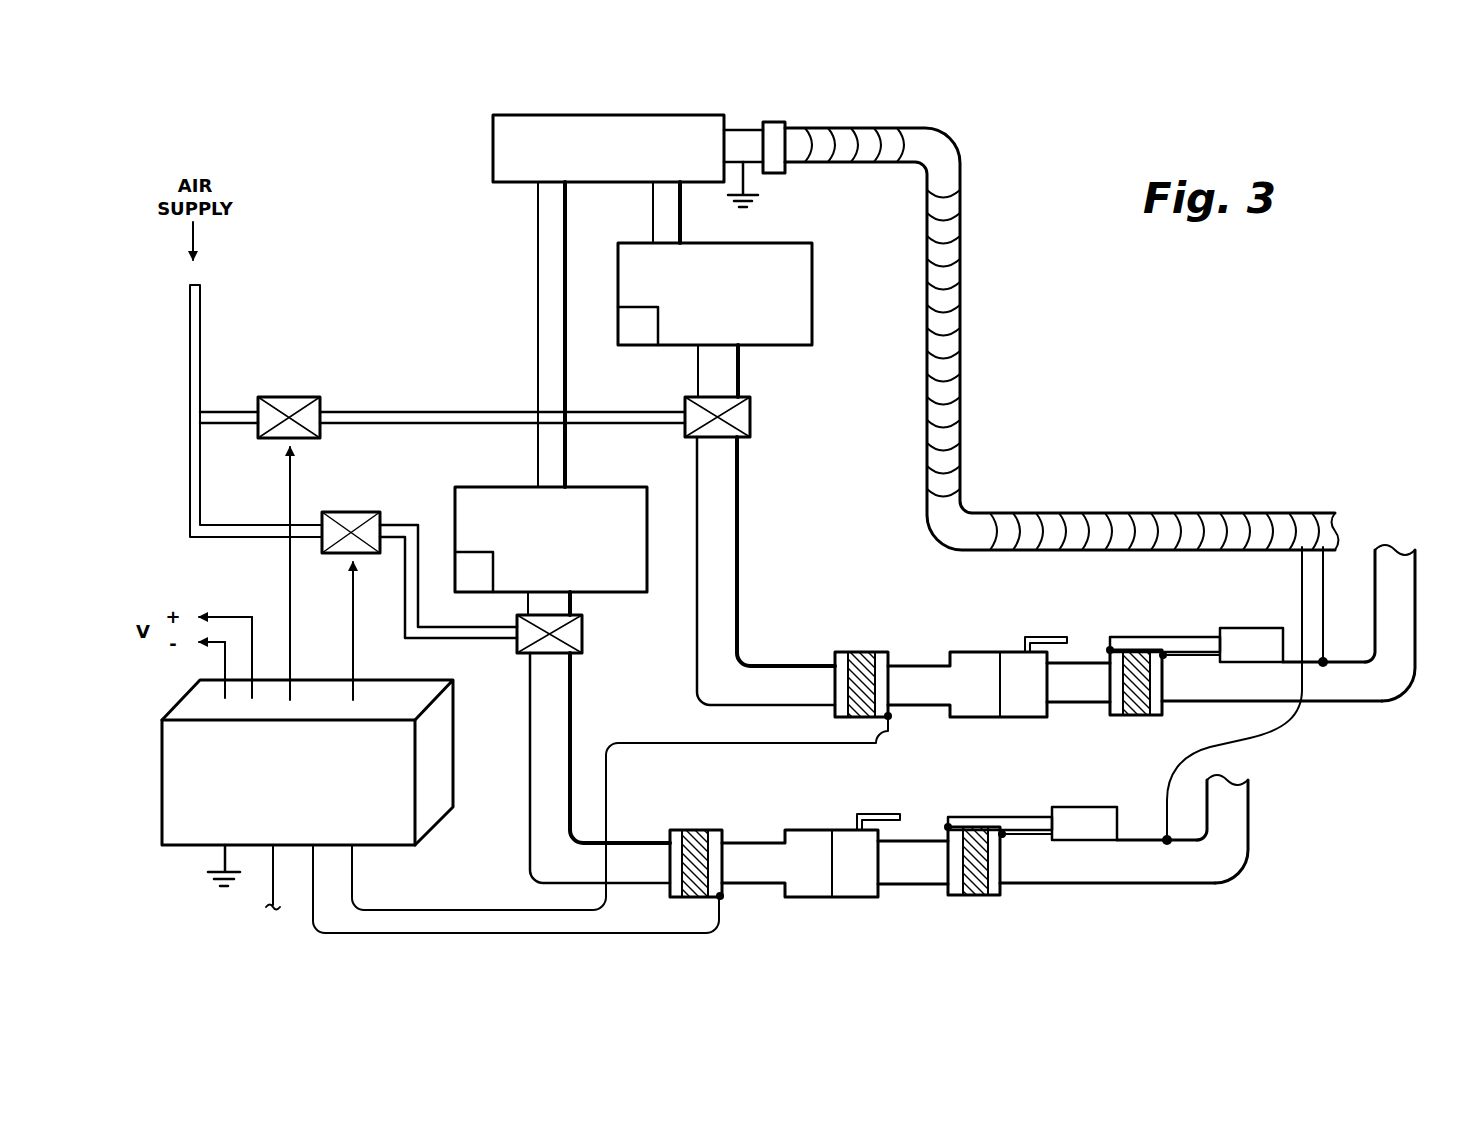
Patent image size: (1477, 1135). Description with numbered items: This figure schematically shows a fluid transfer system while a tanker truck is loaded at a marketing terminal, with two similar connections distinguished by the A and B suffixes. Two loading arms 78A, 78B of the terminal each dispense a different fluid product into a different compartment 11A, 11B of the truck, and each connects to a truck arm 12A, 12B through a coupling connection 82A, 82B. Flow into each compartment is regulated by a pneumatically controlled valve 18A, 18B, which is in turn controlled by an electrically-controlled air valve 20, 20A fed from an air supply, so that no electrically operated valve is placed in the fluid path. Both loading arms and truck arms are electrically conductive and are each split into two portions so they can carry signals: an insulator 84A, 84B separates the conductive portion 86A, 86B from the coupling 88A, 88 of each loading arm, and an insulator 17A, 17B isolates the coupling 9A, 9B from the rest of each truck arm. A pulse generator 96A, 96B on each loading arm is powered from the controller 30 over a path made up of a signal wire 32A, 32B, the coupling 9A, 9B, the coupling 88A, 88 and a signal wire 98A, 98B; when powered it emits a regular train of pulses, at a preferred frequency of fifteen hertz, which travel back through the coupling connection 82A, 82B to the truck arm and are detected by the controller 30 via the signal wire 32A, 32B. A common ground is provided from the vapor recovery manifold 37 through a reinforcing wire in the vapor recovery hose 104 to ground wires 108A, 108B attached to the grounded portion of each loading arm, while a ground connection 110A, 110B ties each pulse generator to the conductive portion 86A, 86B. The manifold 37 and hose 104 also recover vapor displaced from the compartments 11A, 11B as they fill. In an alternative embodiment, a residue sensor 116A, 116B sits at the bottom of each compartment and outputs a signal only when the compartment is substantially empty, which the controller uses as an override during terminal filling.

The vapor recovery manifold 37 is at (675, 123).
The compartment 11A is at (605, 498).
The compartment 11B is at (772, 253).
The residue sensor 116A is at (480, 573).
The residue sensor 116B is at (650, 322).
The vapor recovery hose 104 is at (950, 348).
The electrically-controlled air valve 20 is at (293, 405).
The electrically-controlled air valve 20A is at (353, 522).
The pneumatically controlled valve 18A is at (572, 635).
The pneumatically controlled valve 18B is at (740, 417).
The truck arm 12A is at (560, 713).
The truck arm 12B is at (725, 560).
The controller 30 is at (170, 760).
The signal wire 32A is at (313, 928).
The signal wire 32B is at (360, 903).
The insulator 17A is at (692, 838).
The insulator 17B is at (858, 660).
The coupling 9A is at (743, 852).
The coupling 9B is at (910, 675).
The coupling connection 82A is at (833, 830).
The coupling connection 82B is at (1002, 650).
The coupling 88A is at (910, 883).
The coupling 88 is at (1078, 705).
The insulator 84A is at (978, 887).
The insulator 84B is at (1138, 708).
The signal wire 98A is at (1005, 815).
The signal wire 98B is at (1160, 635).
The ground connection 110A is at (1028, 835).
The ground connection 110B is at (1190, 655).
The pulse generator 96A is at (1087, 832).
The pulse generator 96B is at (1253, 655).
The conductive portion 86A is at (1057, 873).
The conductive portion 86B is at (1207, 695).
The loading arm 78A is at (1235, 833).
The loading arm 78B is at (1403, 605).
The ground wire 108A is at (1250, 735).
The ground wire 108B is at (1323, 610).